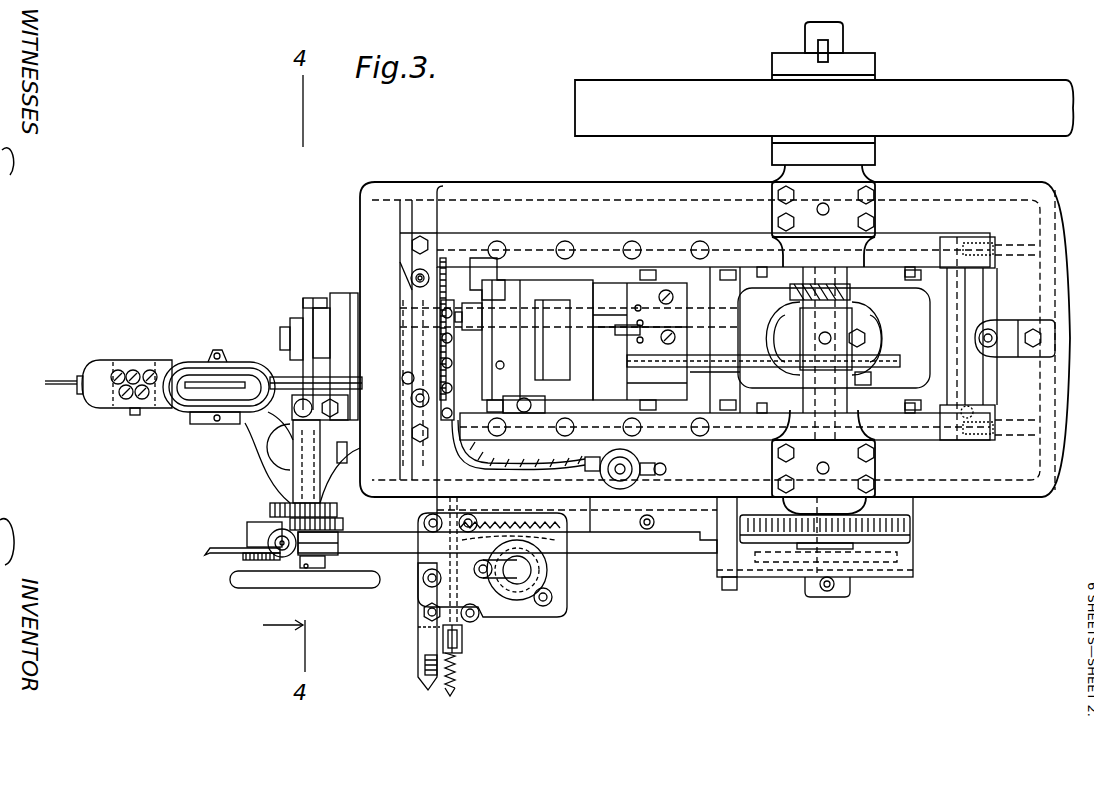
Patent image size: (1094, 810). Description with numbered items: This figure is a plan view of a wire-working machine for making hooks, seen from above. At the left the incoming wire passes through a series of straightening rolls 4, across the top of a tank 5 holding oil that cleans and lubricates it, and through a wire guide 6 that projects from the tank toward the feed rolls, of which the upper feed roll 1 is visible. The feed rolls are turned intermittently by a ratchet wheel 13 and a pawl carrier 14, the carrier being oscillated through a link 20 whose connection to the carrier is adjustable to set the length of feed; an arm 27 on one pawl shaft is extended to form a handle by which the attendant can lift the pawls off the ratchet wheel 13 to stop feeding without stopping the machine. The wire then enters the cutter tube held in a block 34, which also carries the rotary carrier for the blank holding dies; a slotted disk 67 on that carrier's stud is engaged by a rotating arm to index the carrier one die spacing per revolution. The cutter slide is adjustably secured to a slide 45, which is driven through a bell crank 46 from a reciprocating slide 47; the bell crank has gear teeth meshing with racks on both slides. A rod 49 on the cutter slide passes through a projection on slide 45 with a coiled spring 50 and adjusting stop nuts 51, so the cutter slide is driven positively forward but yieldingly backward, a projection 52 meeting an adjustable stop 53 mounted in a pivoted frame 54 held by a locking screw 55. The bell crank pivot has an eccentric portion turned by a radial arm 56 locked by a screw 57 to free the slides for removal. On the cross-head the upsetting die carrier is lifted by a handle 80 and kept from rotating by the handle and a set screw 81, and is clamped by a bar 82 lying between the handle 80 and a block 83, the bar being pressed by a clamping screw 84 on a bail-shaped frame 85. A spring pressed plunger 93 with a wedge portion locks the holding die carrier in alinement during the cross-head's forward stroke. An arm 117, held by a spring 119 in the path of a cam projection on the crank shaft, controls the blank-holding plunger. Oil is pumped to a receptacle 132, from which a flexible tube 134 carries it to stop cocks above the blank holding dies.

The feed roll 1 is at (292, 384).
The straightening rolls 4 is at (134, 370).
The tank 5 is at (184, 364).
The wire guide 6 is at (1063, 368).
The ratchet wheel 13 is at (333, 527).
The pawl carrier 14 is at (250, 542).
The link 20 is at (383, 552).
The arm 27 is at (212, 556).
The block 34 is at (410, 293).
The slide 45 is at (462, 636).
The bell crank 46 is at (517, 542).
The reciprocating slide 47 is at (615, 505).
The rod 49 is at (452, 690).
The coiled spring 50 is at (458, 678).
The adjusting stop nuts 51 is at (462, 648).
The projection 52 is at (425, 627).
The adjustable stop 53 is at (410, 662).
The frame 54 is at (425, 594).
The locking screw 55 is at (424, 576).
The radial projecting arm 56 is at (488, 577).
The locking screw 57 is at (484, 578).
The disk 67 is at (300, 318).
The handle 80 is at (496, 330).
The set screw 81 is at (500, 362).
The bar 82 is at (520, 300).
The block 83 is at (543, 315).
The clamping screw 84 is at (531, 405).
The bail-shaped frame 85 is at (522, 413).
The spring pressed plunger 93 is at (466, 285).
The arm 117 is at (732, 368).
The spring 119 is at (749, 358).
The receptacle 132 is at (641, 466).
The flexible tube 134 is at (526, 446).